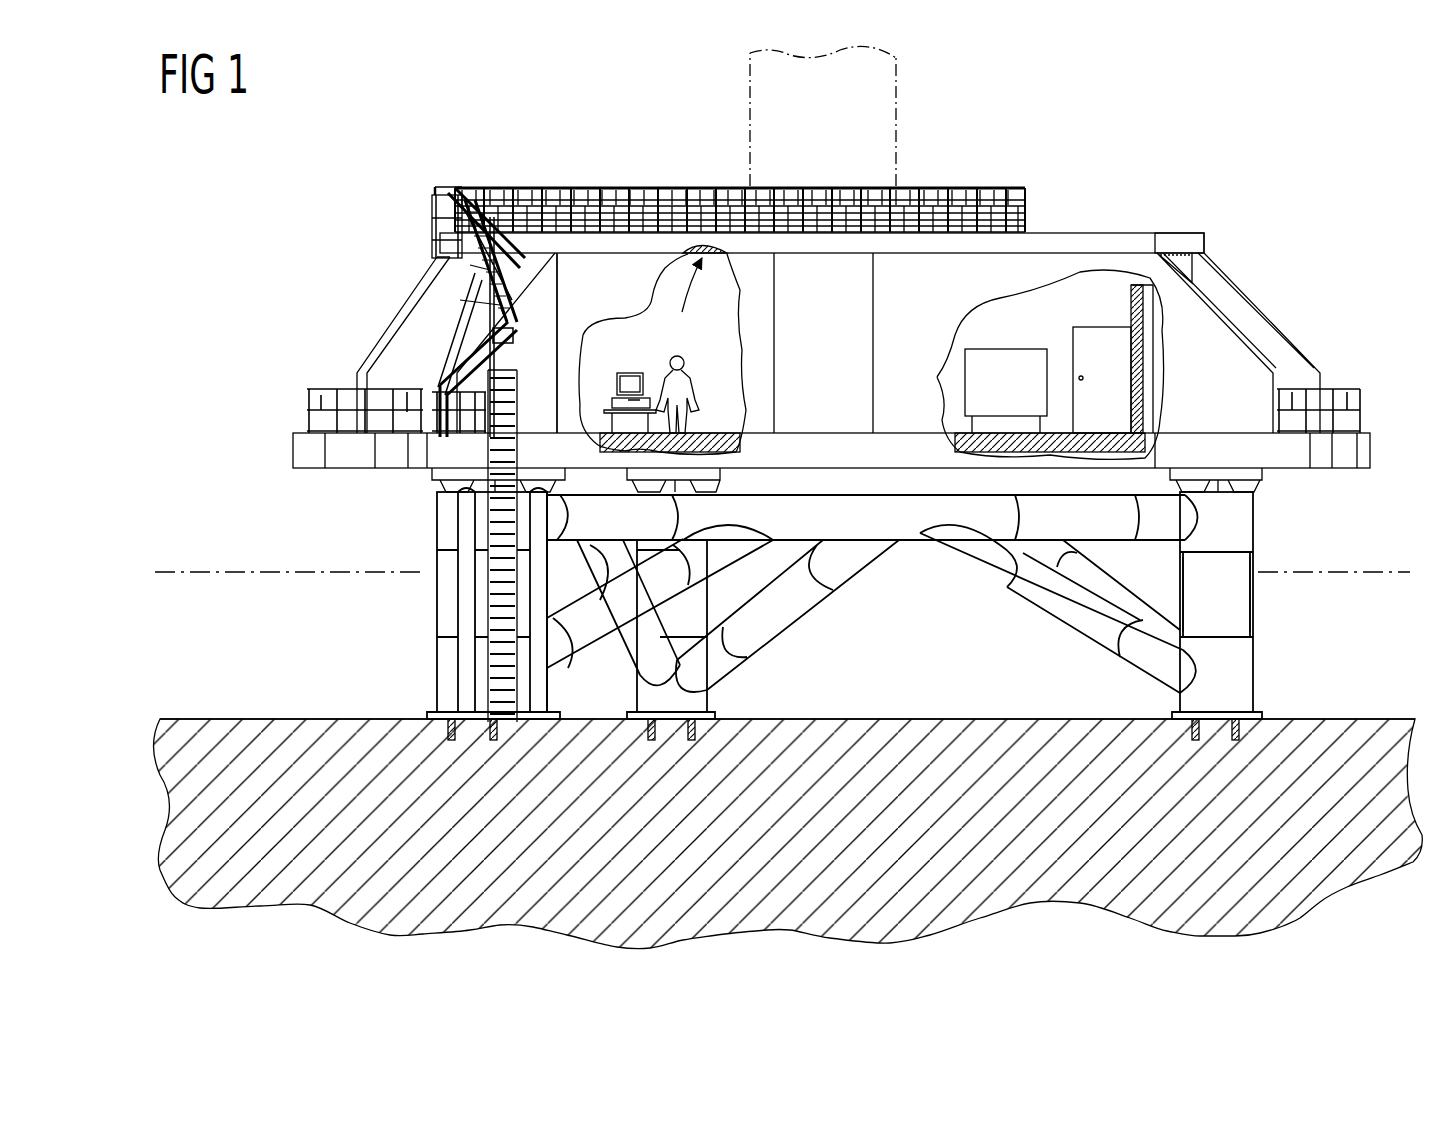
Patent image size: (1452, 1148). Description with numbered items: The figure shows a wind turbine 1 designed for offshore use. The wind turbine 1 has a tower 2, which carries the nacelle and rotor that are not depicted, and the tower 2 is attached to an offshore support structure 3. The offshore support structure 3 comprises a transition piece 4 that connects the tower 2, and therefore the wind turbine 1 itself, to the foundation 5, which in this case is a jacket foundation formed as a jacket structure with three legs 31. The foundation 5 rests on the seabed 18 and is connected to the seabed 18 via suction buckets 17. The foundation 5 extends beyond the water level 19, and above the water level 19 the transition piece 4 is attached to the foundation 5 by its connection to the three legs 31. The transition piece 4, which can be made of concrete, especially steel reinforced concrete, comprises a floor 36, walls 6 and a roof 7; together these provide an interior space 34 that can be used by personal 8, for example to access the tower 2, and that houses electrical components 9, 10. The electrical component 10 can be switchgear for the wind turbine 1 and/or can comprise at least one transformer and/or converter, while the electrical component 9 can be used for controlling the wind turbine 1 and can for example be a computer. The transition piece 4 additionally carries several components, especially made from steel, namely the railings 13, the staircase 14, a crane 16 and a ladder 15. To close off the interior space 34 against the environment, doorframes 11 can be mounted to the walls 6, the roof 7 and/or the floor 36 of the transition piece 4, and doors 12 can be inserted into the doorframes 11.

The wind turbine 1 is at (256, 236).
The tower 2 is at (896, 112).
The offshore support structure 3 is at (234, 445).
The transition piece 4 is at (1181, 243).
The foundation 5 is at (1255, 530).
The walls 6 is at (587, 294).
The roof 7 is at (689, 303).
The personal 8 is at (652, 325).
The electrical component 9 is at (630, 370).
The electrical component 10 is at (1017, 357).
The doorframes 11 is at (1138, 290).
The doors 12 is at (1101, 340).
The railings 13 is at (976, 186).
The staircase 14 is at (467, 280).
The ladder 15 is at (490, 515).
The crane 16 is at (447, 350).
The suction buckets 17 is at (437, 735).
The seabed 18 is at (252, 736).
The water level 19 is at (214, 572).
The legs 31 is at (1245, 600).
The interior space 34 is at (720, 298).
The floor 36 is at (722, 430).